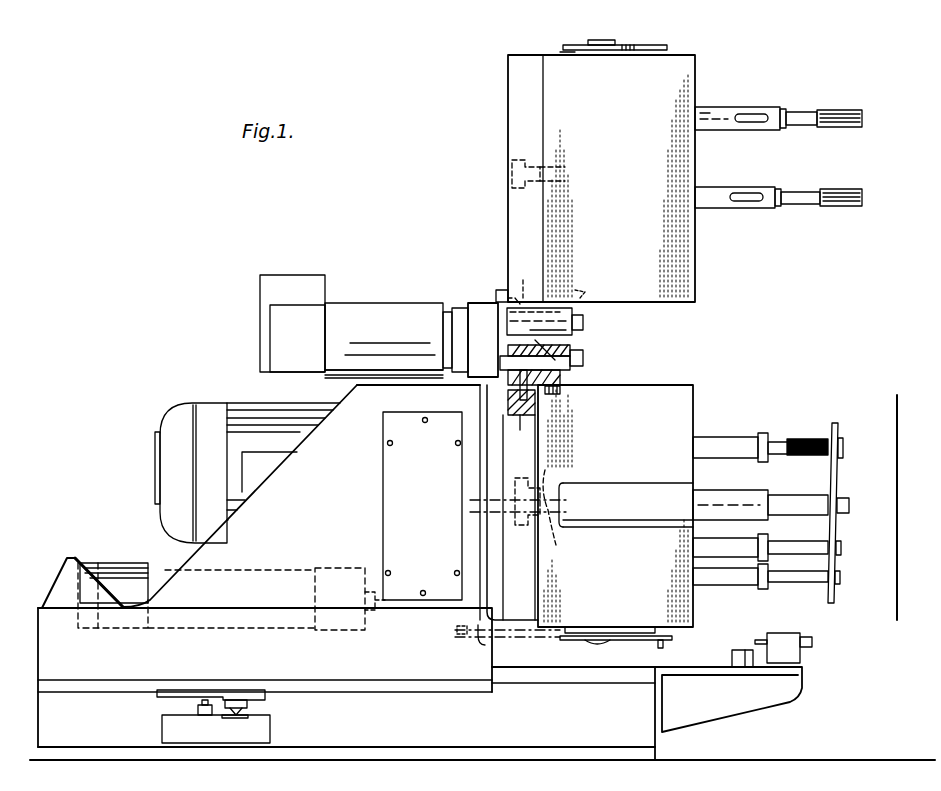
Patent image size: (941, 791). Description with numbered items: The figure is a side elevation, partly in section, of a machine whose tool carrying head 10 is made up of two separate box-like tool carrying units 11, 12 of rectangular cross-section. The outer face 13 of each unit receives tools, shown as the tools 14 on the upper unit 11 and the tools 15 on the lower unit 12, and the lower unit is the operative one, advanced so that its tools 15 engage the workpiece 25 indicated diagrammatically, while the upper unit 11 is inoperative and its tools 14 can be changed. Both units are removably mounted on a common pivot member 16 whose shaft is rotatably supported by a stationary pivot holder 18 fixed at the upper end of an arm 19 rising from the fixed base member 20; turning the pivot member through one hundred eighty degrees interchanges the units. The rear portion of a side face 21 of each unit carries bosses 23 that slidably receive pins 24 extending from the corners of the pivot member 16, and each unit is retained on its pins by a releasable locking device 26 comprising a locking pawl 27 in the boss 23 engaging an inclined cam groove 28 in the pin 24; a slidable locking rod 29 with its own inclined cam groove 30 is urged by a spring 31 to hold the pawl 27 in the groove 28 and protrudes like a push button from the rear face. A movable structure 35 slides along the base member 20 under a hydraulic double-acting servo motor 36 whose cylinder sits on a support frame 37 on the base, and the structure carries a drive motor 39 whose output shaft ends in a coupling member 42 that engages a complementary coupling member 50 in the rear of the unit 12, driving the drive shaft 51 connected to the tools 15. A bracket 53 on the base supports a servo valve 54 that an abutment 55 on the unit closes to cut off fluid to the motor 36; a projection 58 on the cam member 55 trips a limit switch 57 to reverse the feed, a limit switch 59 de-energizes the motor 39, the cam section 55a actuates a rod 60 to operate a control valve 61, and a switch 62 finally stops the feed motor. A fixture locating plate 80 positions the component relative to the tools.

The tool carrying head 10 is at (630, 352).
The tool carrying unit 11 is at (694, 256).
The tool carrying unit 12 is at (697, 405).
The outer face 13 is at (698, 87).
The tools 14 is at (796, 180).
The tools 15 is at (794, 478).
The common pivot member 16 is at (450, 326).
The pivot holder 18 is at (379, 303).
The arm 19 is at (318, 405).
The fixed base member 20 is at (522, 726).
The side face 21 is at (672, 386).
The boss 23 is at (572, 352).
The pin 24 is at (585, 322).
The workpiece 25 is at (897, 415).
The locking device 26 is at (517, 292).
The locking pawl 27 is at (578, 305).
The inclined cam groove 28 is at (545, 325).
The locking rod 29 is at (521, 295).
The inclined cam groove 30 is at (500, 297).
The spring 31 is at (275, 330).
The movable structure 35 is at (102, 656).
The servo motor 36 is at (127, 562).
The support frame 37 is at (63, 578).
The drive motor 39 is at (180, 410).
The coupling member 42 is at (509, 502).
The coupling member 50 is at (510, 160).
The drive shaft 51 is at (560, 542).
The bracket 53 is at (705, 712).
The servo valve 54 is at (762, 640).
The abutment 55 is at (650, 50).
The cam section 55a is at (598, 51).
The limit switch 57 is at (745, 668).
The projection 58 is at (666, 645).
The limit switch 59 is at (250, 710).
The rod 60 is at (486, 640).
The control valve 61 is at (456, 632).
The switch 62 is at (196, 708).
The plate 80 is at (840, 478).